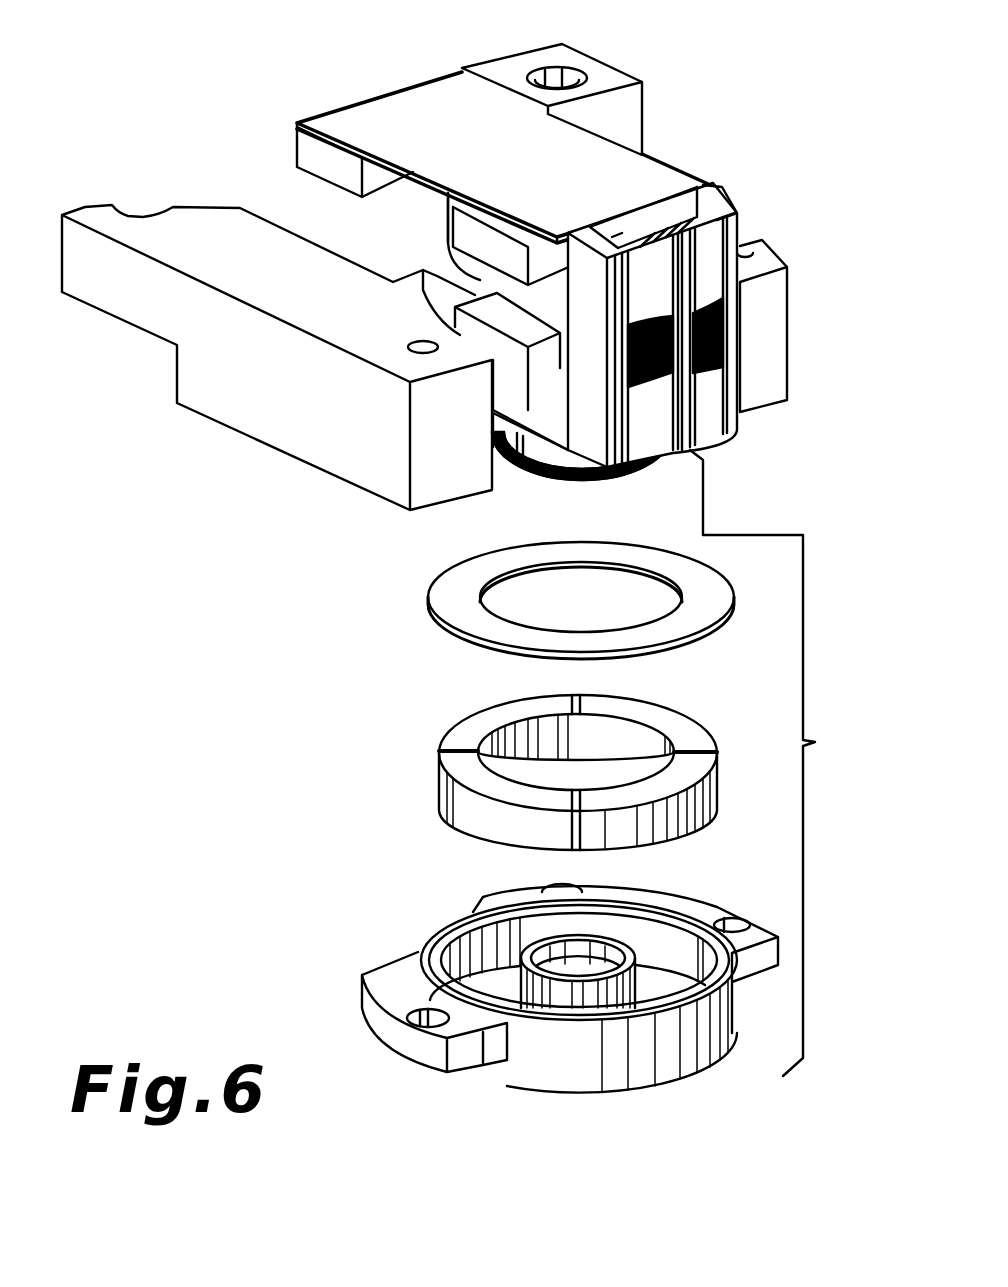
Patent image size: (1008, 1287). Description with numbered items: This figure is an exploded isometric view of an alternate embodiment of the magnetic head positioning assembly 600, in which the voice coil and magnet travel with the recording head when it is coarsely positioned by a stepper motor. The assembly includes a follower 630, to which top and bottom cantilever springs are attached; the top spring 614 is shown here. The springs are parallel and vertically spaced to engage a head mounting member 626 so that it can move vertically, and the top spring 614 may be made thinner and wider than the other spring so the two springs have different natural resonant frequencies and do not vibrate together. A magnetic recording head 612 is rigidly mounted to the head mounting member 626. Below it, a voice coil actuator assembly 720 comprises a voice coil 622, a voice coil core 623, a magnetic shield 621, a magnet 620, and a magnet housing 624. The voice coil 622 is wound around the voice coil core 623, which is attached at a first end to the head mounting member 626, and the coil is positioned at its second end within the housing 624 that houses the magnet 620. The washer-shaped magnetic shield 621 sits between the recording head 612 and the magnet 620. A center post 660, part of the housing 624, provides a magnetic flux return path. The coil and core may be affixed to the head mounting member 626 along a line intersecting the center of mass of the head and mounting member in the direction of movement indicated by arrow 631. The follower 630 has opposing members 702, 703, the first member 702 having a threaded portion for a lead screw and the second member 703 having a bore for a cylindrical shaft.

The magnetic head positioning assembly 600 is at (778, 70).
The magnetic recording head 612 is at (722, 234).
The top cantilever spring 614 is at (538, 173).
The magnet 620 is at (453, 737).
The magnetic shield 621 is at (447, 610).
The voice coil 622 is at (603, 485).
The voice coil core 623 is at (548, 455).
The magnet housing 624 is at (535, 1070).
The head mounting member 626 is at (717, 198).
The follower 630 is at (617, 82).
The arrow 631 is at (850, 376).
The center post 660 is at (540, 988).
The first member of follower 702 is at (328, 304).
The second follower member 703 is at (762, 388).
The voice coil actuator assembly 720 is at (795, 763).